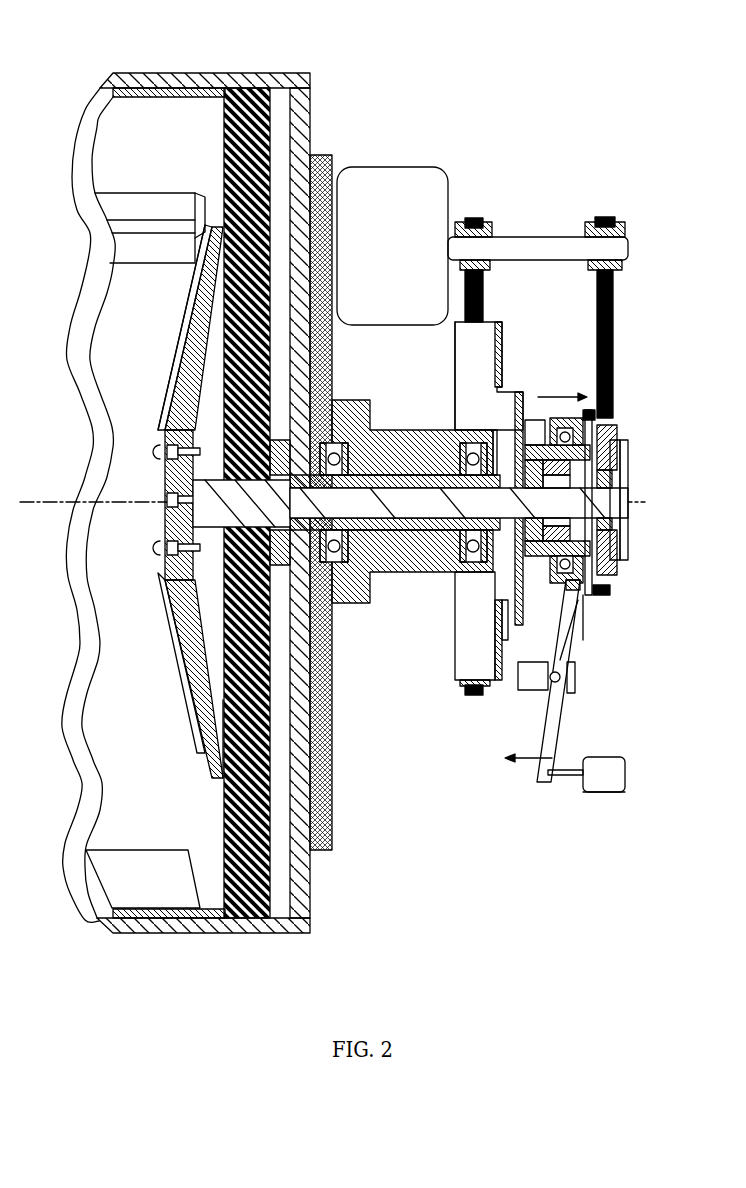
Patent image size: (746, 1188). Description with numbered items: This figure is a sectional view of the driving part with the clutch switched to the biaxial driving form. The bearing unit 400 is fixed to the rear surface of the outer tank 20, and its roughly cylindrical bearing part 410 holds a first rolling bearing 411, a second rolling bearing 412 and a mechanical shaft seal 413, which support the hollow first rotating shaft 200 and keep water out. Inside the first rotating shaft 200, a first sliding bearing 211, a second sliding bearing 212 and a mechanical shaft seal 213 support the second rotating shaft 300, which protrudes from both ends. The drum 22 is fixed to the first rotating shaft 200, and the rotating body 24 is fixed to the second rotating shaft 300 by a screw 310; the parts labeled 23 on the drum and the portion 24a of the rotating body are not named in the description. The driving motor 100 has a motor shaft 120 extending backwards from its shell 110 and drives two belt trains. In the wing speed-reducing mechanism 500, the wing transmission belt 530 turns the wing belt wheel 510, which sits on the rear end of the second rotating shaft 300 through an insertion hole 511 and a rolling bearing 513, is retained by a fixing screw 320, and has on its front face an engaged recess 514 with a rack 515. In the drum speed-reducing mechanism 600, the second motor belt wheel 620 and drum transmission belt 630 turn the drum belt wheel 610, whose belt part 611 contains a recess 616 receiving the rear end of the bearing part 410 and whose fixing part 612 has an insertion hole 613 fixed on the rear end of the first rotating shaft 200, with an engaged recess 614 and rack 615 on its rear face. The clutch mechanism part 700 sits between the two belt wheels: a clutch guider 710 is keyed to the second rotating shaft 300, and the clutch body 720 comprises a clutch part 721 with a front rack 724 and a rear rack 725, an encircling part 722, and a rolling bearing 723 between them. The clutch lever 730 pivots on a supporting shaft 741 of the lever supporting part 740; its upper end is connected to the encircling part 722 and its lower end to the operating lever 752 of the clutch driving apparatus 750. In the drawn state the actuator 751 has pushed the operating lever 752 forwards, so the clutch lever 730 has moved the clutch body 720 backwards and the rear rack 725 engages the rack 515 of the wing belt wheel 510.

The outer tank 20 is at (255, 73).
The drum 22 is at (175, 78).
The magnets 23 is at (157, 192).
The rotating body 24 is at (180, 312).
The flange edge 24a is at (170, 340).
The driving motor 100 is at (482, 210).
The shell 110 is at (393, 167).
The motor shaft 120 is at (548, 237).
The first rotating shaft 200 is at (222, 627).
The first sliding bearing 211 is at (272, 445).
The second sliding bearing 212 is at (430, 531).
The mechanical shaft seal 213 is at (272, 458).
The second rotating shaft 300 is at (163, 575).
The screw 310 is at (165, 545).
The fixing screw 320 is at (630, 495).
The bearing unit 400 is at (321, 157).
The bearing part 410 is at (395, 433).
The first rolling bearing 411 is at (348, 604).
The second rolling bearing 412 is at (466, 573).
The mechanical shaft seal 413 is at (222, 677).
The wing speed-reducing mechanism 500 is at (614, 454).
The wing belt wheel 510 is at (626, 546).
The insertion hole 511 is at (630, 478).
The rolling bearing 513 is at (615, 472).
The engaged recess 514 is at (600, 532).
The rack 515 is at (612, 587).
The wing transmission belt 530 is at (614, 305).
The drum speed-reducing mechanism 600 is at (453, 338).
The drum belt wheel 610 is at (455, 650).
The belt part 611 is at (503, 336).
The fixing part 612 is at (505, 390).
The insertion hole 613 is at (440, 437).
The engaged recess 614 is at (530, 690).
The rack 615 is at (506, 636).
The recess 616 is at (475, 386).
The second motor belt wheel 620 is at (480, 230).
The drum transmission belt 630 is at (484, 305).
The clutch mechanism part 700 is at (554, 718).
The clutch guider 710 is at (620, 440).
The clutch body 720 is at (600, 428).
The clutch part 721 is at (540, 435).
The encircling part 722 is at (549, 418).
The rolling bearing 723 is at (580, 592).
The front rack 724 is at (585, 625).
The rear rack 725 is at (605, 600).
The clutch lever 730 is at (520, 760).
The lever supporting part 740 is at (540, 735).
The supporting shaft 741 is at (576, 690).
The clutch driving apparatus 750 is at (626, 766).
The actuator 751 is at (605, 795).
The operating lever 752 is at (570, 778).